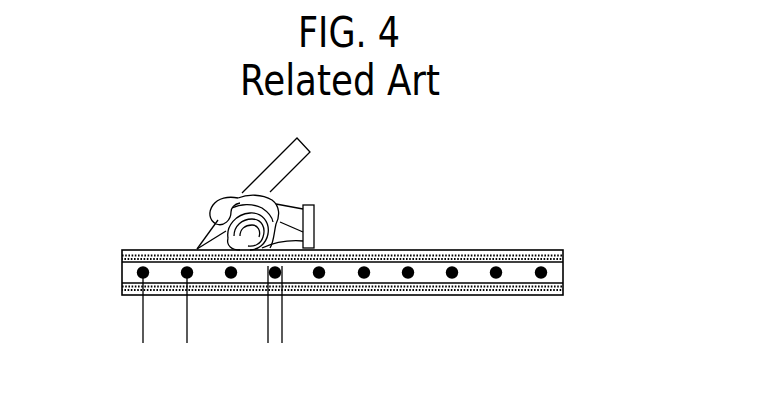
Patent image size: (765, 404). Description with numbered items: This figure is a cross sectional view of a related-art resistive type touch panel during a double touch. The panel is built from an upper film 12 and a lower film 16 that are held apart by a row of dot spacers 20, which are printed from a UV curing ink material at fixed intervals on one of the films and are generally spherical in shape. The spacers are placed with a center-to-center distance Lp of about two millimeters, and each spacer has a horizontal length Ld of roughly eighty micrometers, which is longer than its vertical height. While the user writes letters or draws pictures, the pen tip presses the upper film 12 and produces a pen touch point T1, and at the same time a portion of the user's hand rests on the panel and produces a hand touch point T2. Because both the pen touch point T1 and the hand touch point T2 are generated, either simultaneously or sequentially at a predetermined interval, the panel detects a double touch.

The upper film 12 is at (563, 253).
The lower film 16 is at (563, 286).
The dot spacer 20 is at (495, 265).
The pen touch point T1 is at (196, 246).
The hand touch point T2 is at (278, 242).
The center-to-center distance between dot spacers Lp is at (215, 334).
The horizontal length of dot spacer Ld is at (240, 334).